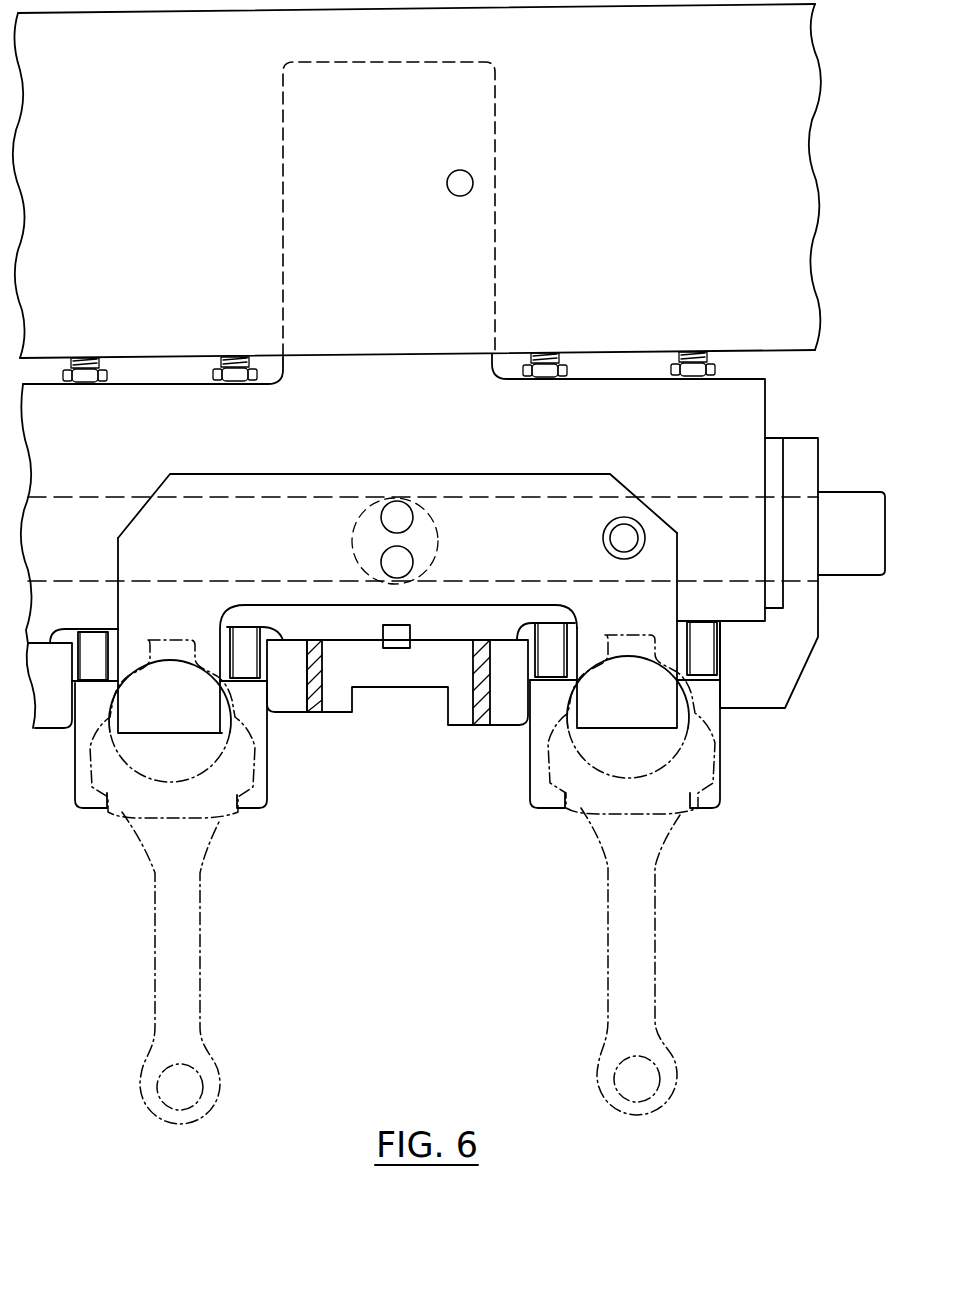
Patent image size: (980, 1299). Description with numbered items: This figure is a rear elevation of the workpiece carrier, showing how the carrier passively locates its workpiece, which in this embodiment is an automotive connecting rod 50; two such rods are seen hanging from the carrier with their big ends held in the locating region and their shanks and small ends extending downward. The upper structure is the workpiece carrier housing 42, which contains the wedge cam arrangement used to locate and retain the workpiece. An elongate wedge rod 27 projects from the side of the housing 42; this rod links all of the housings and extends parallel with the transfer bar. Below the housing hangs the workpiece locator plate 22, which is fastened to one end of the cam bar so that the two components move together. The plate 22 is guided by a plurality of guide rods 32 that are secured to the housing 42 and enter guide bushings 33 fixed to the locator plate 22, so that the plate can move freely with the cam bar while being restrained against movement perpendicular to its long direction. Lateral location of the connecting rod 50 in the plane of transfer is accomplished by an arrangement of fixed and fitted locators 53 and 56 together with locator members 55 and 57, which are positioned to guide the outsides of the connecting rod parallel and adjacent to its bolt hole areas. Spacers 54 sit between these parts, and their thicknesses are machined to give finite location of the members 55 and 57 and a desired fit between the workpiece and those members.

The workpiece locator plate 22 is at (448, 473).
The wedge rod 27 is at (853, 499).
The guide rod 32 is at (614, 530).
The guide bushing 33 is at (634, 518).
The workpiece carrier housing 42 is at (272, 367).
The connecting rod 50 is at (183, 963).
The locator 53 is at (455, 718).
The spacer 54 is at (478, 728).
The locator member 55 is at (515, 714).
The locator 56 is at (312, 708).
The locator member 57 is at (292, 704).